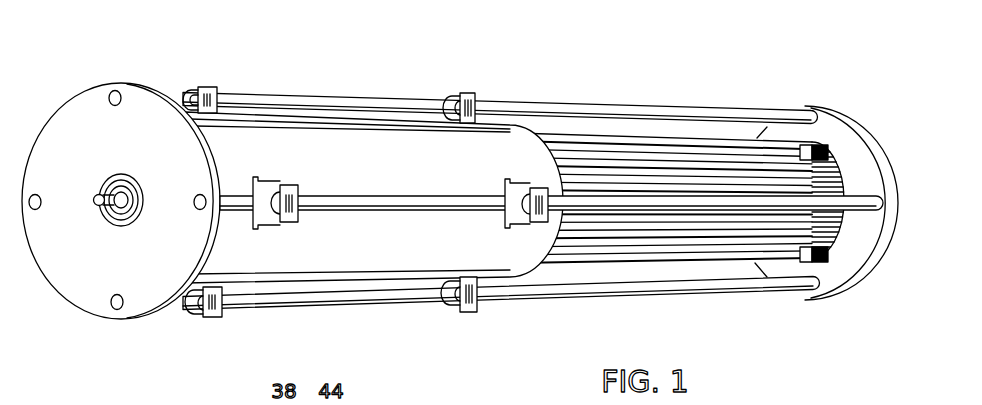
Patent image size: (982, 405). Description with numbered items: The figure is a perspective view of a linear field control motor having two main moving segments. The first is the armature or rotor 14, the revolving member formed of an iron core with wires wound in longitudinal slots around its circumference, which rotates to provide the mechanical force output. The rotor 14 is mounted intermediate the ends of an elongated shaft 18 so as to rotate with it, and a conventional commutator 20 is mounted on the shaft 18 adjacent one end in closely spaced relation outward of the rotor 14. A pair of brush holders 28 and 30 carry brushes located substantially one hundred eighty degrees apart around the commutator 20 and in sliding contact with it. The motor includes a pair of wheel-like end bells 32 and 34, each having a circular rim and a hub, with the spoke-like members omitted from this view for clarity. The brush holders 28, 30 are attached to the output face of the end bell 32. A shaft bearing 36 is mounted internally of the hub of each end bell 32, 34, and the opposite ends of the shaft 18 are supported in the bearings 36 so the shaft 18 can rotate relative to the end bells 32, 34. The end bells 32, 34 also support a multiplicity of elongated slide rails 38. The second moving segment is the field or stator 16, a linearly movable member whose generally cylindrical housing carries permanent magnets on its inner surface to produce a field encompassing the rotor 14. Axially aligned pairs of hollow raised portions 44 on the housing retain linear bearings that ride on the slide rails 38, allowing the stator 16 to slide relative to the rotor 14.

The armature or rotor 14 is at (688, 264).
The field or stator 16 is at (532, 272).
The shaft 18 is at (96, 205).
The commutator 20 is at (841, 180).
The brush holder 28 is at (820, 145).
The brush holder 30 is at (827, 262).
The end bell 32 is at (808, 293).
The end bell 34 is at (97, 312).
The shaft bearing 36 is at (120, 227).
The slide rails 38 is at (674, 108).
The raised portions 44 is at (213, 88).